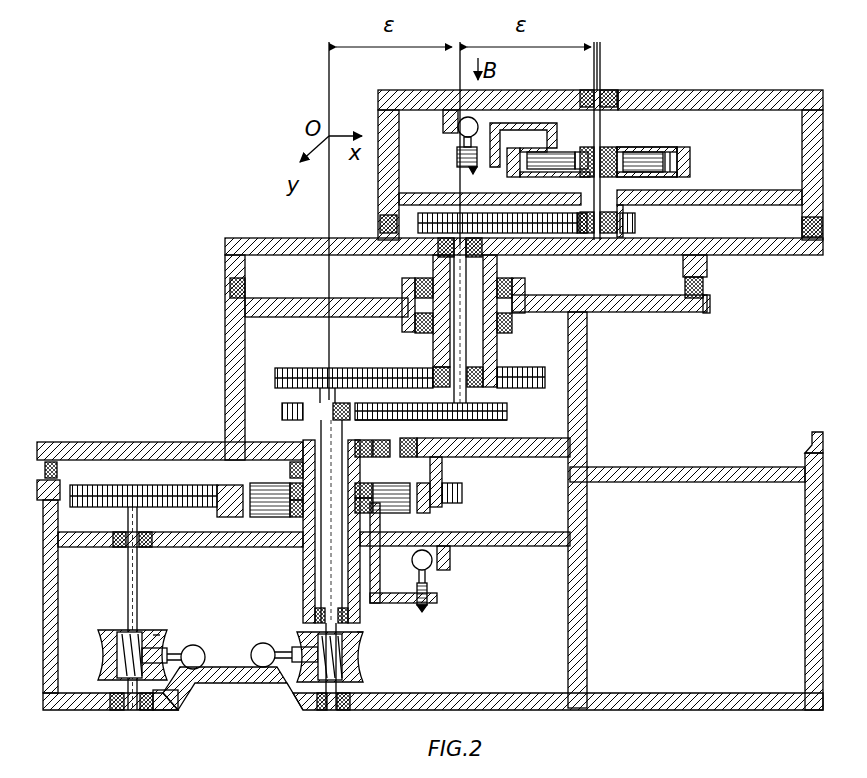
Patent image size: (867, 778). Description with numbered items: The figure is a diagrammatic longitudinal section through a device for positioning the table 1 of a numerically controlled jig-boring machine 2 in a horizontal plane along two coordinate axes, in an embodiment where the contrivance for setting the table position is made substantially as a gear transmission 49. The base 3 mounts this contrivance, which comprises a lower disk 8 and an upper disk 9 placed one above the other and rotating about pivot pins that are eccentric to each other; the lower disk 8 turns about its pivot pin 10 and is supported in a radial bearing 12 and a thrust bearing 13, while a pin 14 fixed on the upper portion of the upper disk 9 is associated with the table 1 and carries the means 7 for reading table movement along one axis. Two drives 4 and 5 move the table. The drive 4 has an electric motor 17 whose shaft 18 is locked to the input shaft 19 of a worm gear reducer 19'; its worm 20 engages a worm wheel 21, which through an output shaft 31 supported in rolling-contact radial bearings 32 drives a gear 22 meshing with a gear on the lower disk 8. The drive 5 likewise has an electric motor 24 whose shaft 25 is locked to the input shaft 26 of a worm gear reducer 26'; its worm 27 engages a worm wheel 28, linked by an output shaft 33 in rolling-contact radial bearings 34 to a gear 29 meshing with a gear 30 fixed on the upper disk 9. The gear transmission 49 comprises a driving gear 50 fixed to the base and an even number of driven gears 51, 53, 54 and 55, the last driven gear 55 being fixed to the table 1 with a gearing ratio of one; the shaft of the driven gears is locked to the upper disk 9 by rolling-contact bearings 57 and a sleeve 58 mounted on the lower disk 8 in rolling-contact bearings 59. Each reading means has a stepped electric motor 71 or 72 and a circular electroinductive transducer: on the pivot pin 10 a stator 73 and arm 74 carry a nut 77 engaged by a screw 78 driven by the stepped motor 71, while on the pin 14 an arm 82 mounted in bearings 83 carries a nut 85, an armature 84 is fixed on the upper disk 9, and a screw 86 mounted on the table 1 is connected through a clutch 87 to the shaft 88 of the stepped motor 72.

The table 1 is at (392, 90).
The jig-boring machine 2 is at (62, 711).
The base 3 is at (805, 637).
The drive 4 is at (155, 700).
The drive 5 is at (627, 92).
The means for reading the length of table movement 7 is at (527, 150).
The lower disk 8 is at (80, 443).
The upper disk 9 is at (252, 237).
The pivot pin 10 is at (303, 566).
The radial bearing 12 is at (295, 440).
The thrust bearing 13 is at (58, 470).
The pin 14 is at (601, 92).
The electric motor 17 is at (206, 655).
The shaft 18 is at (180, 652).
The input shaft 19 is at (170, 630).
The worm gear reducer 19' is at (161, 611).
The worm 20 is at (117, 658).
The worm wheel 21 is at (100, 646).
The gear 22 is at (116, 500).
The electric motor 24 is at (256, 685).
The shaft 25 is at (263, 643).
The input shaft 26 is at (294, 635).
The worm gear reducer 26' is at (385, 621).
The worm 27 is at (357, 662).
The worm wheel 28 is at (350, 690).
The gear 29 is at (298, 367).
The gear 30 is at (482, 446).
The output shaft 31 is at (127, 598).
The rolling-contact radial bearings 32 is at (116, 548).
The output shaft 33 is at (325, 586).
The rolling-contact radial bearings 34 is at (283, 410).
The gear transmission 49 is at (405, 400).
The driving gear 50 is at (370, 403).
The driven gear 51 is at (382, 486).
The driven gear 53 is at (420, 220).
The driven gear 54 is at (611, 284).
The last driven gear 55 is at (636, 222).
The rolling-contact bearings 57 is at (425, 258).
The sleeve 58 is at (498, 350).
The rolling-contact bearings 59 is at (430, 390).
The stepped electric motor 71 is at (433, 568).
The stepped electric motor 72 is at (456, 112).
The stator 73 is at (395, 500).
The arm 74 is at (380, 564).
The nut 77 is at (436, 601).
The screw 78 is at (426, 607).
The arm 82 is at (538, 124).
The bearings 83 is at (621, 150).
The armature 84 is at (691, 162).
The nut 85 is at (457, 160).
The screw 86 is at (474, 172).
The clutch 87 is at (464, 142).
The shaft 88 is at (497, 122).